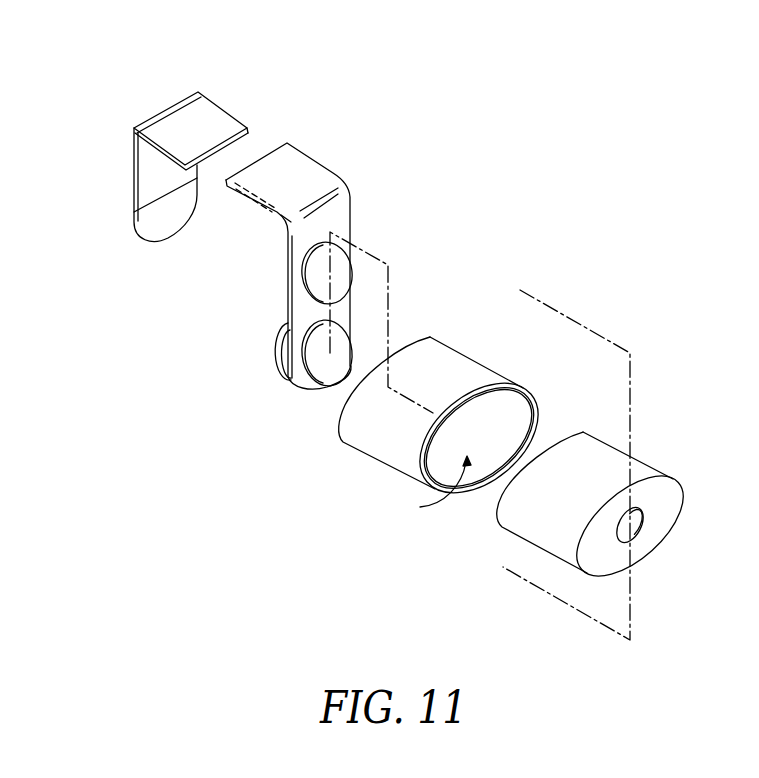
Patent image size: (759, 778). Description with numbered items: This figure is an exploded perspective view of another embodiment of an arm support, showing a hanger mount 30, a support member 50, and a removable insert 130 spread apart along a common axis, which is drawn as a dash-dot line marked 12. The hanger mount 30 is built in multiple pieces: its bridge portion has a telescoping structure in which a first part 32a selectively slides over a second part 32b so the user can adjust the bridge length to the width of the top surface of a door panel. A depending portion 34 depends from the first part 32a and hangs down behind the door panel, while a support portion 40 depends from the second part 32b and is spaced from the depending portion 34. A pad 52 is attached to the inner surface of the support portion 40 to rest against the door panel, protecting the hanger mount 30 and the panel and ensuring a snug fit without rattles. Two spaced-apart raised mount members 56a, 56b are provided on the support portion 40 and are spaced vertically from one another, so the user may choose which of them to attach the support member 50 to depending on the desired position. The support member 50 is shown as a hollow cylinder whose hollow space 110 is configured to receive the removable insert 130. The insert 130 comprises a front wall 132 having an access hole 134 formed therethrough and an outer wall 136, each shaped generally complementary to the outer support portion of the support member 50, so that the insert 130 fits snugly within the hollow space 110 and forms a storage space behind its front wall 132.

The hanger mount 30 is at (180, 154).
The first part of bridge portion 32a is at (208, 115).
The second part of bridge portion 32b is at (290, 165).
The depending portion 34 is at (132, 178).
The support portion 40 is at (300, 250).
The pad 52 is at (282, 343).
The raised mount member 56a is at (317, 280).
The raised mount member 56b is at (320, 373).
The support member 50 is at (468, 342).
The hollow space 110 is at (425, 489).
The axis 12 is at (553, 458).
The removable insert 130 is at (581, 504).
The front wall 132 is at (670, 493).
The access hole 134 is at (636, 528).
The outer wall 136 is at (533, 509).